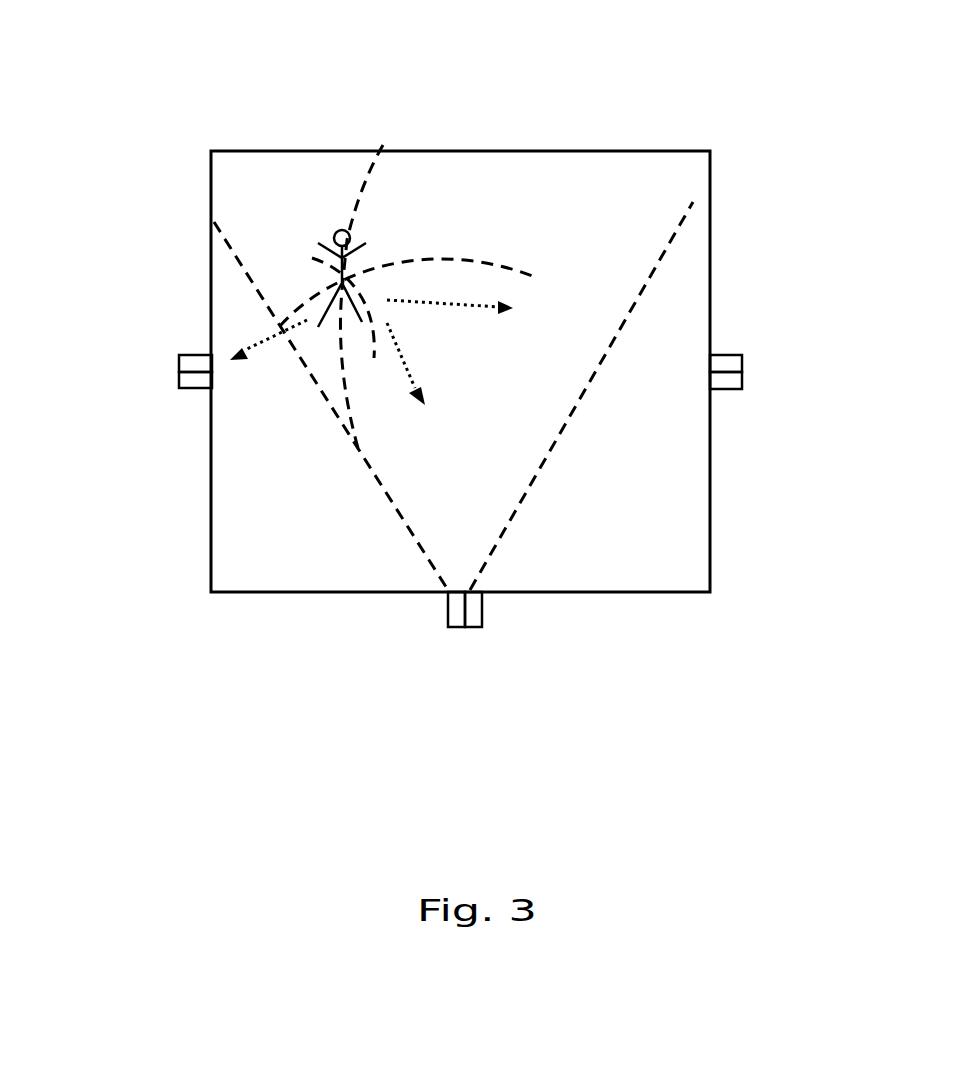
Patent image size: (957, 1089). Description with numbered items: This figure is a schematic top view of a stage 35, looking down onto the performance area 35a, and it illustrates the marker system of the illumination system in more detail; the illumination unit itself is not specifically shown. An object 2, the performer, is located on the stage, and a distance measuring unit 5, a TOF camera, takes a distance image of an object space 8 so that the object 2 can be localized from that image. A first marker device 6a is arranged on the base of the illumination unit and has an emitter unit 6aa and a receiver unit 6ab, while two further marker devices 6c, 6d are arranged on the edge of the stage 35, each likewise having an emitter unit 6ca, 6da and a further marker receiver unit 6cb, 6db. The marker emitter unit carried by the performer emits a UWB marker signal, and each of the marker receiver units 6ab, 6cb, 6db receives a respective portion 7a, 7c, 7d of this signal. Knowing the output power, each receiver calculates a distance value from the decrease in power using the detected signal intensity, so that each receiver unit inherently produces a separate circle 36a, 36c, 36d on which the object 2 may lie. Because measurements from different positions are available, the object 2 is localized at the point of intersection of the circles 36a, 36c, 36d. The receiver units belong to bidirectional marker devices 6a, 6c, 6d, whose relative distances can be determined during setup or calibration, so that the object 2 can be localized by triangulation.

The object 2 is at (337, 194).
The distance measuring unit 5 is at (455, 612).
The first marker device 6a is at (453, 694).
The emitter unit 6aa is at (455, 610).
The receiver unit 6ab is at (475, 615).
The further marker device 6c is at (803, 363).
The emitter unit 6ca is at (766, 403).
The further marker receiver unit 6cb is at (727, 361).
The further marker device 6d is at (118, 381).
The emitter unit 6da is at (156, 405).
The further marker receiver unit 6db is at (197, 364).
The portion of the marker signal 7a is at (405, 367).
The portion of the marker signal 7c is at (437, 302).
The portion of the marker signal 7d is at (252, 343).
The object space 8 is at (625, 246).
The stage 35 is at (611, 592).
The performance area 35a is at (692, 529).
The circle 36a is at (410, 257).
The circle 36c is at (363, 185).
The circle 36d is at (313, 258).